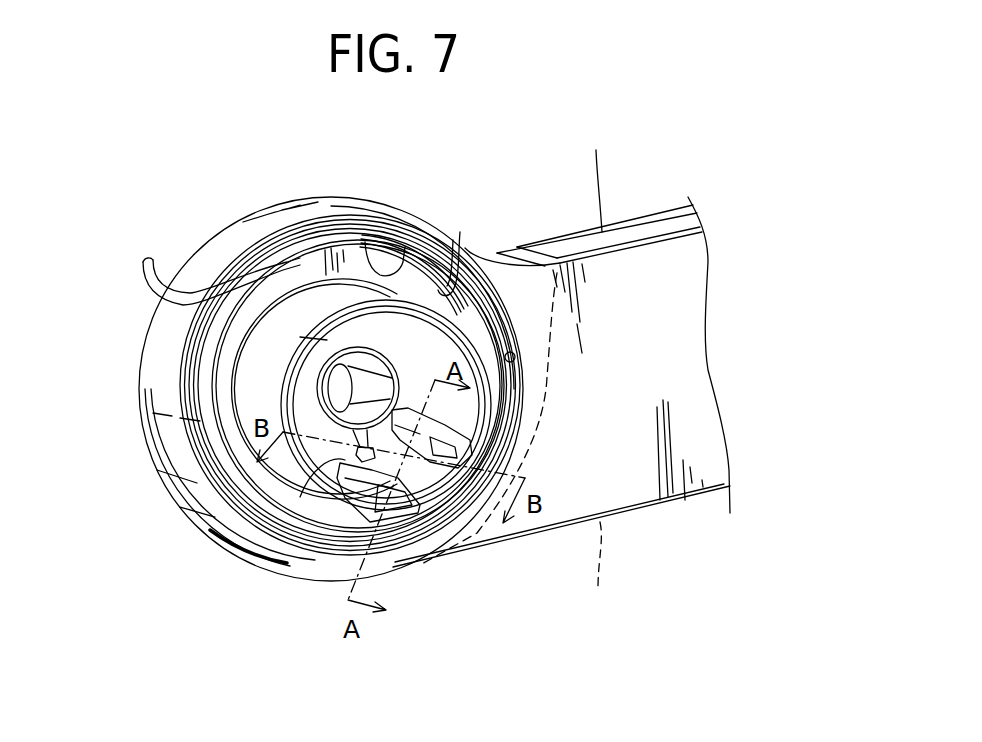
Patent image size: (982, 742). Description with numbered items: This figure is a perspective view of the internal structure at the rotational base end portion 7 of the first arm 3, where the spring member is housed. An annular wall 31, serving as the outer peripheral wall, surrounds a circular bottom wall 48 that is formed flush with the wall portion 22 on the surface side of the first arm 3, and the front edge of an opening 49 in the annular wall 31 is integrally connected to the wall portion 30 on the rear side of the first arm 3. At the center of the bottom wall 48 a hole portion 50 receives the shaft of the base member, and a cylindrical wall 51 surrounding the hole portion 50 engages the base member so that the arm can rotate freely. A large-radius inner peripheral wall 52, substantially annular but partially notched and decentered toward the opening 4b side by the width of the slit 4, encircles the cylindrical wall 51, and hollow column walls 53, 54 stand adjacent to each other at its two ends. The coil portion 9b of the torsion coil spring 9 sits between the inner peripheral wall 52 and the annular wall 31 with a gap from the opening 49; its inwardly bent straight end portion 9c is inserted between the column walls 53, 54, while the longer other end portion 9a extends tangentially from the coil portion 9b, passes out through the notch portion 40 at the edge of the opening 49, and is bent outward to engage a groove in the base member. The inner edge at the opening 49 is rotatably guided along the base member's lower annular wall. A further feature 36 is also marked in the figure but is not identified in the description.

The first arm 3 is at (633, 187).
The slit 4 is at (657, 228).
The opening 4b is at (605, 571).
The rotational base end portion 7 is at (142, 484).
The torsion coil spring 9 is at (408, 262).
The other end portion 9a is at (210, 290).
The coil portion 9b is at (460, 232).
The one end portion 9c is at (300, 515).
The wall portion 22 is at (591, 176).
The wall portion 30 is at (668, 470).
The annular wall 31 is at (248, 223).
The hidden rear rim 36 is at (545, 378).
The notch portion 40 is at (325, 217).
The circular wall portion 48 is at (312, 270).
The opening 49 is at (515, 361).
The hole portion 50 is at (275, 505).
The cylindrical wall 51 is at (217, 463).
The inner peripheral wall 52 is at (273, 353).
The hollow column wall 53 is at (355, 500).
The hollow column wall 54 is at (427, 407).